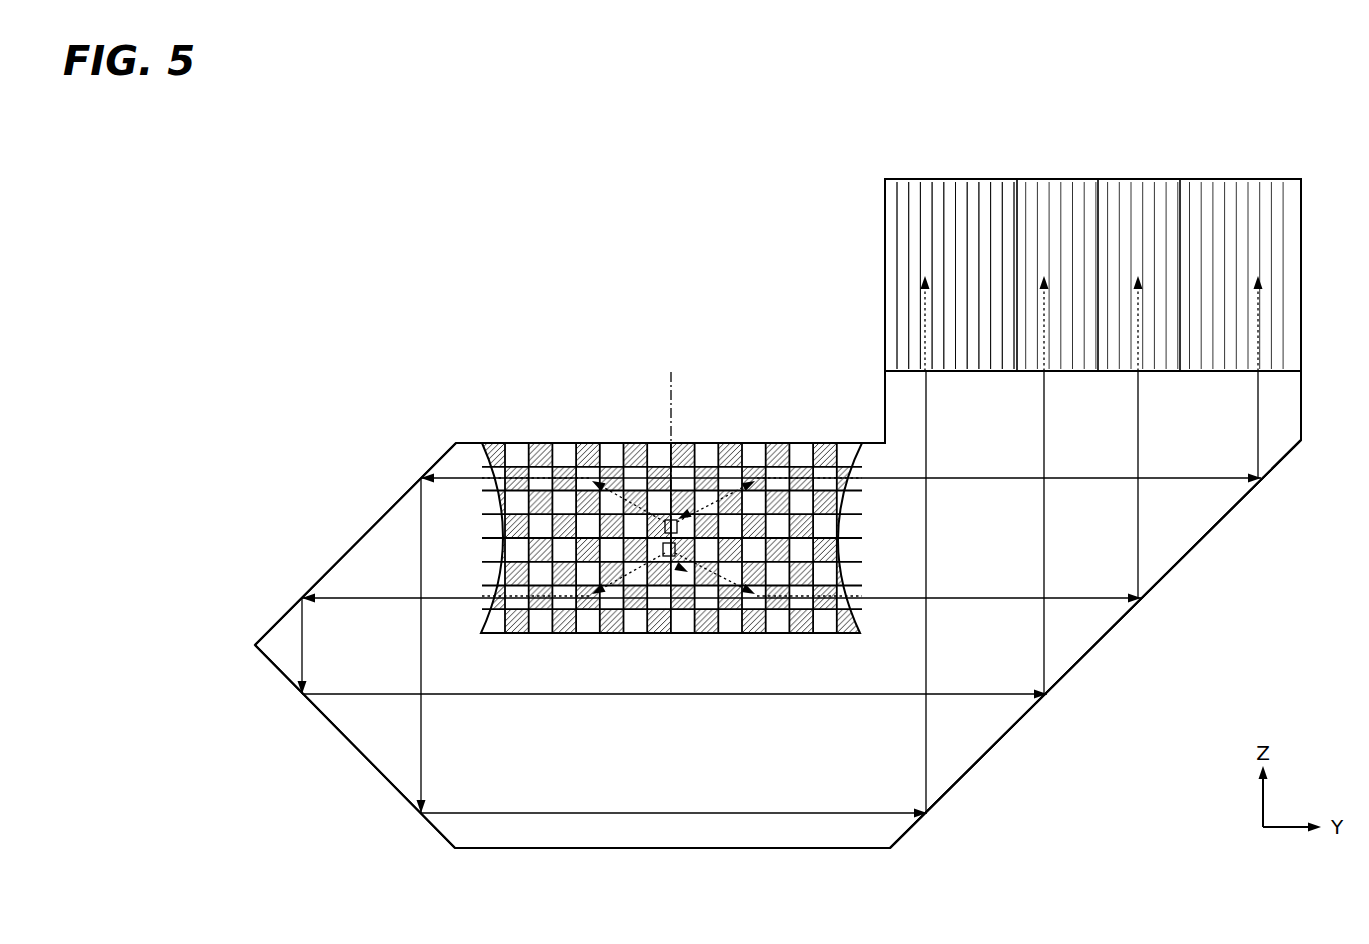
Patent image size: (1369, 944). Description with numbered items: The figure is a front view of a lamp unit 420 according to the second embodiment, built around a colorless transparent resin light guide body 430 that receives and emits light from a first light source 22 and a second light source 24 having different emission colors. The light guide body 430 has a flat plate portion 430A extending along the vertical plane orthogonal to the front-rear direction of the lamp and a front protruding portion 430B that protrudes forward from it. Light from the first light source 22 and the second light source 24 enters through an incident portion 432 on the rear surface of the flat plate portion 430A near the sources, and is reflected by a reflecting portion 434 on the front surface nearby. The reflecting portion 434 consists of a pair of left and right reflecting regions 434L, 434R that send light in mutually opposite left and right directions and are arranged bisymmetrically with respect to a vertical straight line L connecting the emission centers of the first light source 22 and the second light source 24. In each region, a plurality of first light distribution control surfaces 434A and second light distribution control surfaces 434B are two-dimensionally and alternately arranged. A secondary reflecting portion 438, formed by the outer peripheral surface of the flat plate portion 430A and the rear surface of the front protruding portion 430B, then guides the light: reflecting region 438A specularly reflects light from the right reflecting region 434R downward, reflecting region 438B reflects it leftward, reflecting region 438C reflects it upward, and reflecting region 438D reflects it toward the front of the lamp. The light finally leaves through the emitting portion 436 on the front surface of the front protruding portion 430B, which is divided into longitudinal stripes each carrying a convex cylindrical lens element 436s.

The lamp unit 420 is at (456, 202).
The light guide body 430 is at (1146, 635).
The flat plate portion 430A is at (444, 448).
The front protruding portion 430B is at (882, 217).
The incident portion 432 is at (657, 440).
The reflecting portion 434 is at (579, 638).
The right reflecting region 434R is at (620, 365).
The left reflecting region 434L is at (858, 365).
The first light distribution control surfaces 434A is at (730, 473).
The second light distribution control surfaces 434B is at (803, 468).
The emitting portion 436 is at (984, 175).
The lens elements 436s is at (1008, 352).
The secondary reflecting portion 438 is at (986, 765).
The reflecting region 438A is at (352, 545).
The reflecting region 438B is at (350, 745).
The reflecting region 438C is at (1070, 667).
The reflecting region 438D is at (1147, 225).
The first light source 22 is at (698, 470).
The second light source 24 is at (681, 560).
The straight line L is at (670, 590).